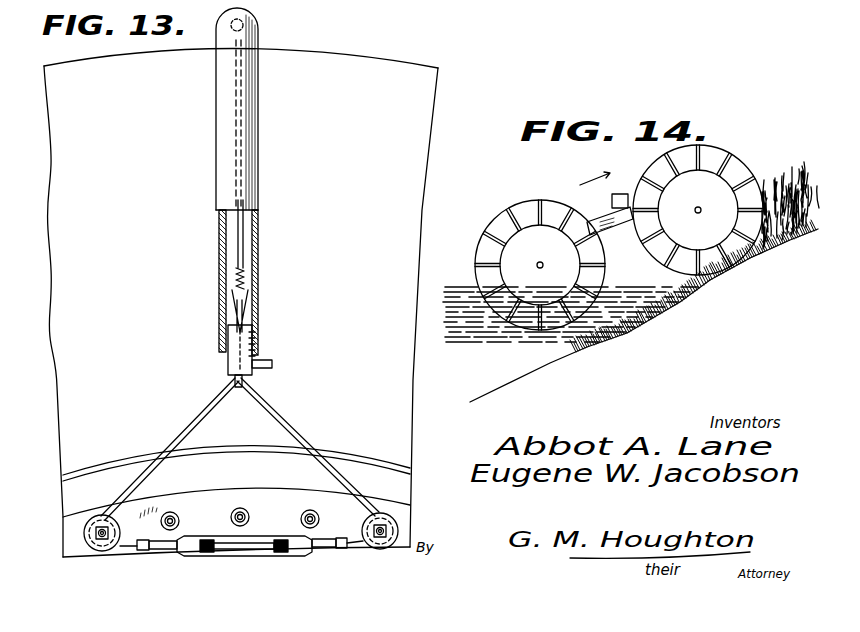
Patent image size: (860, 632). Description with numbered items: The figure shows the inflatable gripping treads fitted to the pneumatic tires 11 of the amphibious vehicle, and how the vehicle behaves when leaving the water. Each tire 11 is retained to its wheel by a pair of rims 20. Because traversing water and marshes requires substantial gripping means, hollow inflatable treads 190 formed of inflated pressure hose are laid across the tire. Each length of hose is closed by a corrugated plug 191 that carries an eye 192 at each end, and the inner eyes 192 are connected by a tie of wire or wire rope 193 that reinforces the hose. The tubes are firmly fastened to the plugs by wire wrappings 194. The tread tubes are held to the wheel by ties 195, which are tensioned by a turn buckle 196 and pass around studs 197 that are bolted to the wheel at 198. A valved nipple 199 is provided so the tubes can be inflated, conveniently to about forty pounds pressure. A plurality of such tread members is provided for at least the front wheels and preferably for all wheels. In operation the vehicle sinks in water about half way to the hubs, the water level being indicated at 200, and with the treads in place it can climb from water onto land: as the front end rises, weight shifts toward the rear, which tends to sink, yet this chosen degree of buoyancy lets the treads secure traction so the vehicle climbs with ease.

In FIG. 13, the pneumatic tires 11 is at (352, 61).
In FIG. 14, the pneumatic tires 11 is at (541, 201).
In FIG. 13, the rims 20 is at (410, 468).
In FIG. 13, the hollow inflatable tread 190 is at (260, 30).
In FIG. 14, the hollow inflatable tread 190 is at (494, 224).
In FIG. 13, the corrugated plug 191 is at (256, 325).
In FIG. 13, the eyes 192 is at (244, 379).
In FIG. 13, the tie of wire or wire rope 193 is at (243, 230).
In FIG. 13, the wire wrappings 194 is at (218, 352).
In FIG. 13, the ties 195 is at (310, 439).
In FIG. 13, the turn buckle 196 is at (226, 557).
In FIG. 13, the studs 197 is at (110, 550).
In FIG. 13, the bolts 198 is at (388, 528).
In FIG. 13, the valved nipple 199 is at (272, 364).
In FIG. 14, the water level 200 is at (459, 281).